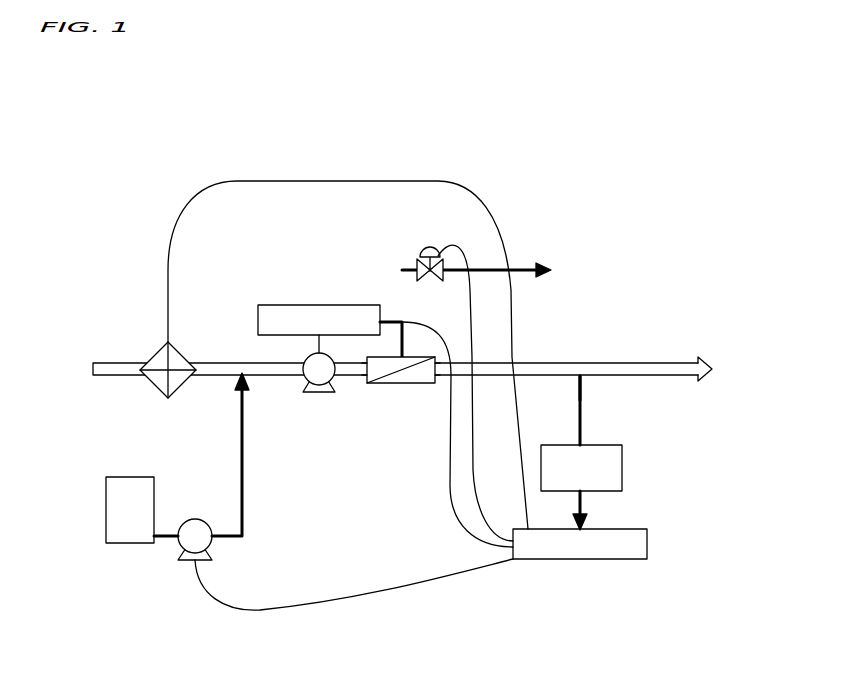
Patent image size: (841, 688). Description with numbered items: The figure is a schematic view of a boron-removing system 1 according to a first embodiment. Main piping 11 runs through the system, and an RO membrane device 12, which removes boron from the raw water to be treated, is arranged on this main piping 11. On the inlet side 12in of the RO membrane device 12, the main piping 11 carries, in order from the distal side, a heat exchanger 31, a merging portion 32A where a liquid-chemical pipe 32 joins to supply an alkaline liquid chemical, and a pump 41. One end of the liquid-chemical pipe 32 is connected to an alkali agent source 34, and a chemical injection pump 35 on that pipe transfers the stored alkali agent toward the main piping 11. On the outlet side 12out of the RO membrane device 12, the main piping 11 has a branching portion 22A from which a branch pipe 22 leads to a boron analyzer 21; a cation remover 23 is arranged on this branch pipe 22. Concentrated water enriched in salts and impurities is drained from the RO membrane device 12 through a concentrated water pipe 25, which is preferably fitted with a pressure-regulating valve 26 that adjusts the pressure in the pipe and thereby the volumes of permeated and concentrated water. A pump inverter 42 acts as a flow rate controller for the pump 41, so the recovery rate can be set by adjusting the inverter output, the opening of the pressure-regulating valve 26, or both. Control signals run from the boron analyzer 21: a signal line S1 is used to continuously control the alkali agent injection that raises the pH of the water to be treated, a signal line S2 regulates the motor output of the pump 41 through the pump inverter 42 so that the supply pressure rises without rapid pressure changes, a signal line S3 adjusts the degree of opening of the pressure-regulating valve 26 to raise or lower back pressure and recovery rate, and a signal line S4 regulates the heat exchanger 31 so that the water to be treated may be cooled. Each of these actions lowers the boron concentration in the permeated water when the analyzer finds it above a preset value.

The boron-removing system 1 is at (558, 142).
The main piping 11 is at (213, 364).
The RO membrane device 12 is at (395, 384).
The inlet side 12in is at (364, 376).
The outlet side 12out is at (440, 377).
The boron analyzer 21 is at (633, 546).
The branch pipe 22 is at (590, 406).
The branching portion 22A is at (578, 386).
The cation remover 23 is at (606, 470).
The concentrated water pipe 25 is at (517, 266).
The pressure-regulating valve 26 is at (435, 248).
The heat exchanger 31 is at (152, 362).
The liquid-chemical pipe 32 is at (237, 428).
The merging portion 32A is at (236, 378).
The alkali agent source 34 is at (128, 482).
The chemical injection pump 35 is at (198, 527).
The pump 41 is at (325, 378).
The pump inverter 42 is at (327, 312).
The signal line S1 is at (420, 578).
The signal line S2 is at (447, 470).
The signal line S3 is at (480, 500).
The signal line S4 is at (289, 183).